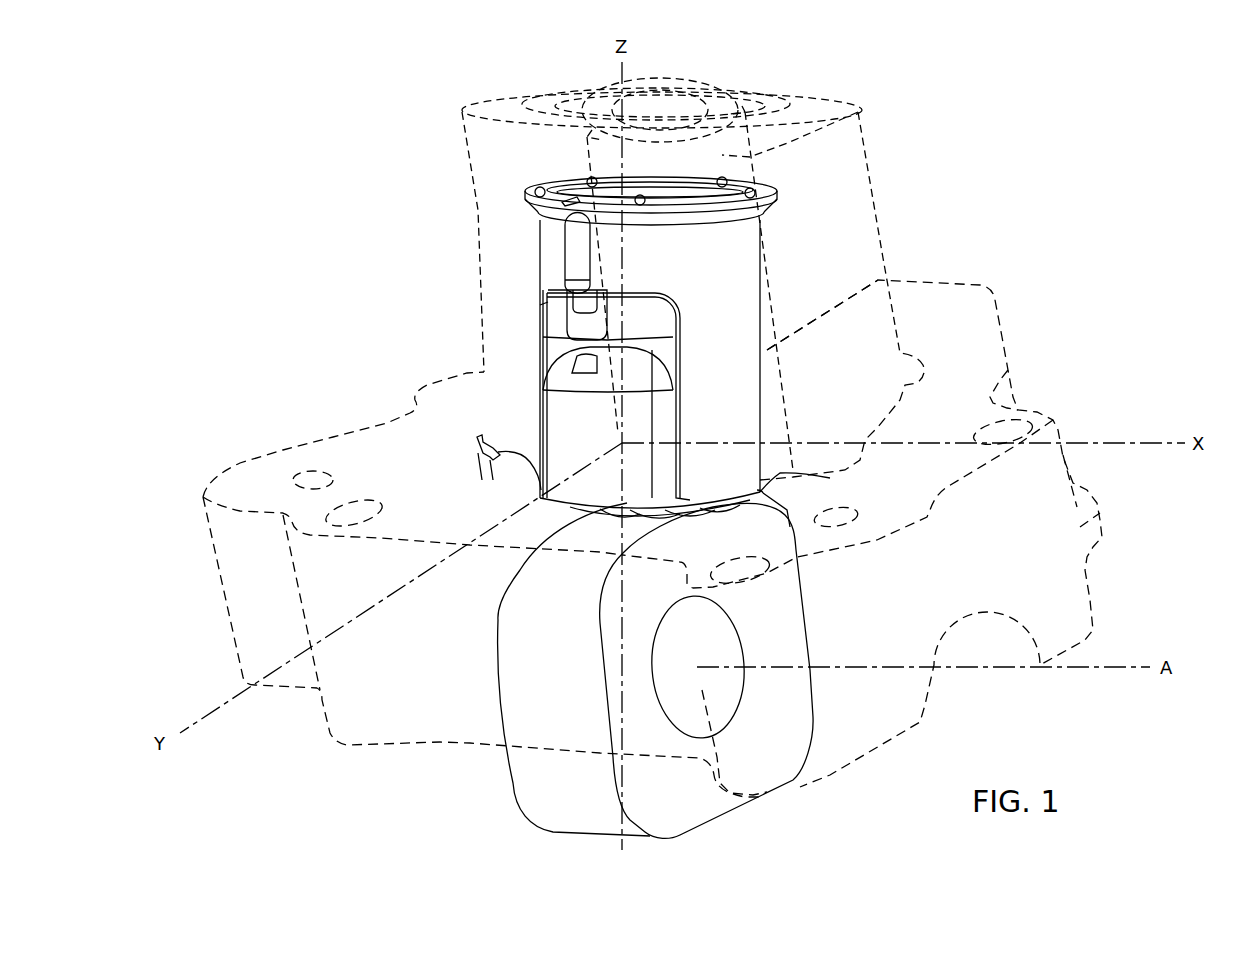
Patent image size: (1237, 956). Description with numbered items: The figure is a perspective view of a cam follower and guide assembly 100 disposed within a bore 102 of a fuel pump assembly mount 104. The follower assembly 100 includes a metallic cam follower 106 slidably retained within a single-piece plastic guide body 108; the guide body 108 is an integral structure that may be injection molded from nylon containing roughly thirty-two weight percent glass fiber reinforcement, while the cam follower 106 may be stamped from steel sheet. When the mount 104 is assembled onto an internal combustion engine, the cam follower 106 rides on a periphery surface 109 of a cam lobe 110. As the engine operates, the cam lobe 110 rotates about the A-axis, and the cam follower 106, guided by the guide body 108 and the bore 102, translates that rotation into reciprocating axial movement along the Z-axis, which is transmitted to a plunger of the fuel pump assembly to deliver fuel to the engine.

The cam follower and guide assembly 100 is at (878, 280).
The bore 102 is at (858, 112).
The fuel pump assembly mount 104 is at (1017, 348).
The cam follower 106 is at (560, 425).
The guide body 108 is at (538, 258).
The periphery surface 109 is at (525, 633).
The cam lobe 110 is at (805, 737).